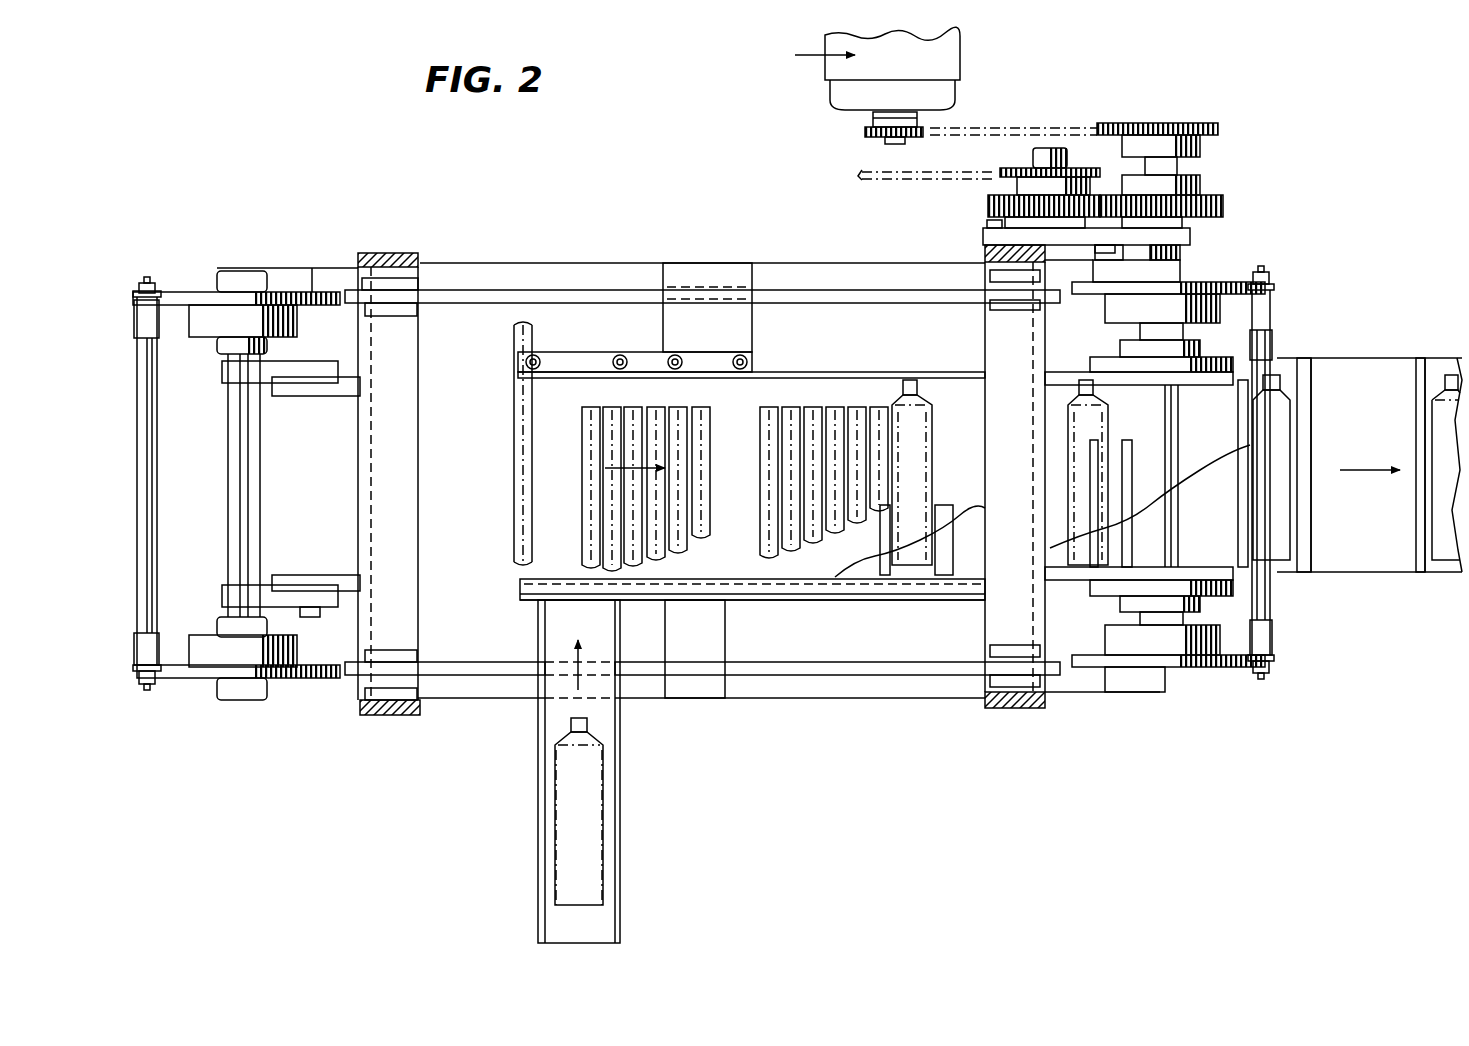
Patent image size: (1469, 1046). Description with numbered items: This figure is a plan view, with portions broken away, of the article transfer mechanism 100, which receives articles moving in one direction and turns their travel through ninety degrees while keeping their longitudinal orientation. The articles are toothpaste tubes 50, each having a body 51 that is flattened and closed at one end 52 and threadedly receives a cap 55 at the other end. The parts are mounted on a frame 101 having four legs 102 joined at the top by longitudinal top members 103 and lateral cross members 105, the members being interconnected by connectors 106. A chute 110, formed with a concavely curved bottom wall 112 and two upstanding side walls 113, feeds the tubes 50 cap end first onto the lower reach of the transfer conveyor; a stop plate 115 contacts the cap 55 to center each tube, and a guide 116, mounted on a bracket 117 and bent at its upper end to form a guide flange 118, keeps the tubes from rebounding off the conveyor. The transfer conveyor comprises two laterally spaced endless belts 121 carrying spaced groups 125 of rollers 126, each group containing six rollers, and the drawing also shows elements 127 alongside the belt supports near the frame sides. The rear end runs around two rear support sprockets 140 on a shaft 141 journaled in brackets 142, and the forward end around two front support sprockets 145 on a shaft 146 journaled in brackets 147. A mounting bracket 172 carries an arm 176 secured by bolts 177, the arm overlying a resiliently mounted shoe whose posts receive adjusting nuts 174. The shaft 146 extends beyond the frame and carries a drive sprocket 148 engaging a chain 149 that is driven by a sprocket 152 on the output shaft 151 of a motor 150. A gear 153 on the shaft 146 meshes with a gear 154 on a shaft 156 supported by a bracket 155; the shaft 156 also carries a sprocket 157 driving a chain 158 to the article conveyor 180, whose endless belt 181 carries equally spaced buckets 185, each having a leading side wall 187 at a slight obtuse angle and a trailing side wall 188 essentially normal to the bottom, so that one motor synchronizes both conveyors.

The article transfer mechanism 100 is at (275, 122).
The frame 101 is at (563, 240).
The legs 102 is at (390, 254).
The top members 103 is at (633, 275).
The cross members 105 is at (410, 470).
The connectors 106 is at (987, 224).
The chute 110 is at (536, 891).
The bottom wall 112 is at (603, 922).
The side walls 113 is at (622, 841).
The stop plate 115 is at (518, 378).
The guide 116 is at (840, 590).
The bracket 117 is at (712, 644).
The guide flange 118 is at (775, 597).
The endless belts 121 is at (138, 284).
The roller groups 125 is at (137, 490).
The rollers 126 is at (600, 407).
The spacer collar 127 is at (135, 323).
The rear support sprockets 140 is at (175, 296).
The shaft 141 is at (242, 470).
The brackets 142 is at (304, 385).
The front support sprockets 145 is at (1232, 282).
The shaft 146 is at (1180, 493).
The brackets 147 is at (1055, 380).
The drive sprocket 148 is at (1218, 127).
The chain 149 is at (1068, 130).
The motor 150 is at (853, 68).
The output shaft 151 is at (888, 144).
The sprocket 152 is at (865, 133).
The gear 153 is at (1223, 201).
The gear 154 is at (1105, 190).
The bracket 155 is at (1190, 236).
The shaft 156 is at (1000, 225).
The sprocket 157 is at (1020, 168).
The chain 158 is at (862, 181).
The mounting bracket 172 is at (720, 272).
The adjusting nuts 174 is at (538, 356).
The arm 176 is at (592, 360).
The bolts 177 is at (735, 355).
The article conveyor 180 is at (1400, 575).
The endless belt 181 is at (1376, 368).
The buckets 185 is at (955, 543).
The leading side wall 187 is at (1303, 516).
The trailing side wall 188 is at (1420, 494).
The toothpaste tubes 50 is at (892, 395).
The body 51 is at (932, 436).
The end 52 is at (582, 905).
The cap 55 is at (917, 388).